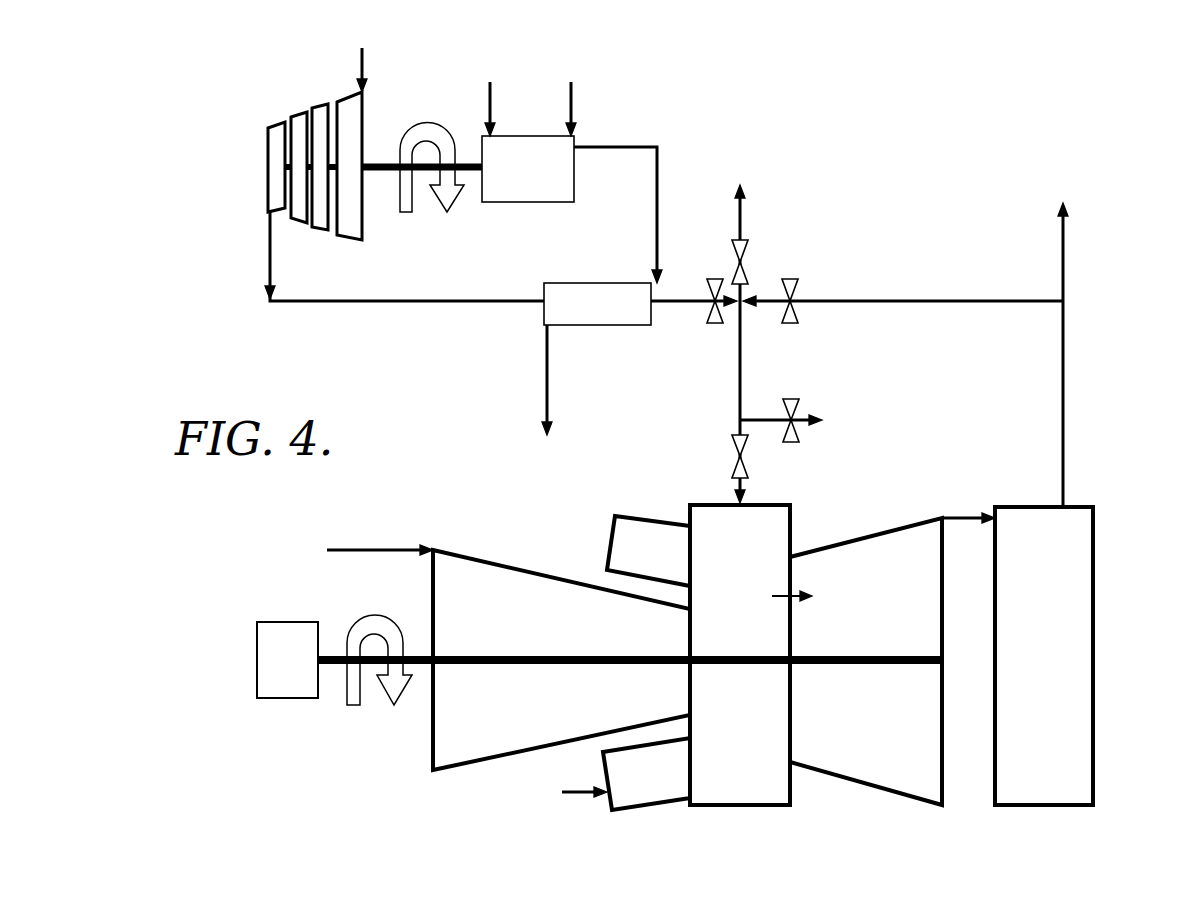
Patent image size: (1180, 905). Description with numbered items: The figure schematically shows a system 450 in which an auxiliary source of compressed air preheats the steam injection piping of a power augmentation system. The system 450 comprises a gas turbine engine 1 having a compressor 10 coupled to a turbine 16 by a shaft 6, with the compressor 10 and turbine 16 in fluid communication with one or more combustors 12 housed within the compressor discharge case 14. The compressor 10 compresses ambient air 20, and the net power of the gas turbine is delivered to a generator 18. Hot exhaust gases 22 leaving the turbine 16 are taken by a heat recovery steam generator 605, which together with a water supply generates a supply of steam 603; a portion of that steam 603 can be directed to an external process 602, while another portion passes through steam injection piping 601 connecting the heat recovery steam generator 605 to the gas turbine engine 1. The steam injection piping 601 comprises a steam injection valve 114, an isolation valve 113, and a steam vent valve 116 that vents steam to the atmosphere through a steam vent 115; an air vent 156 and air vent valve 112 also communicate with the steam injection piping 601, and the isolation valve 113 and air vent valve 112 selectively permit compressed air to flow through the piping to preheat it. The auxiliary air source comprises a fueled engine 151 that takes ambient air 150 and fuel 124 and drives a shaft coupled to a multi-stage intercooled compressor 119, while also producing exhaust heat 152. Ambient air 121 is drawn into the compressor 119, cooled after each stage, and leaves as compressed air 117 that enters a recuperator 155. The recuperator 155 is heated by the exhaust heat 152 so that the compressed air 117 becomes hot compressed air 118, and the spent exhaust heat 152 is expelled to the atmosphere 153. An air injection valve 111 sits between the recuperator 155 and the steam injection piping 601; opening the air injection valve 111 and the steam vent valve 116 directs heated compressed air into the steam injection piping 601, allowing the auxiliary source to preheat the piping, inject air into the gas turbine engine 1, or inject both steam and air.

The gas turbine engine 1 is at (360, 789).
The shaft 6 is at (600, 668).
The compressor 10 is at (561, 660).
The combustors 12 is at (626, 663).
The compressor discharge case 14 is at (751, 655).
The turbine 16 is at (866, 661).
The generator 18 is at (287, 660).
The ambient air 20 is at (363, 550).
The hot exhaust gases 22 is at (968, 505).
The air injection valve 111 is at (707, 289).
The air vent valve 112 is at (758, 262).
The isolation valve 113 is at (763, 456).
The steam injection valve 114 is at (809, 296).
The steam vent 115 is at (801, 419).
The steam vent valve 116 is at (804, 407).
The compressed air 117 is at (404, 272).
The hot compressed air 118 is at (694, 313).
The multi-stage compressor 119 is at (295, 112).
The ambient air 121 is at (363, 55).
The fuel 124 is at (495, 97).
The ambient air 150 is at (572, 97).
The fueled engine 151 is at (528, 169).
The exhaust heat 152 is at (618, 205).
The atmosphere 153 is at (547, 394).
The recuperator 155 is at (597, 304).
The air vent 156 is at (745, 230).
The system 450 is at (978, 121).
The steam injection piping 601 is at (881, 391).
The external process 602 is at (1062, 341).
The steam 603 is at (1044, 656).
The heat recovery steam generator 605 is at (1093, 553).